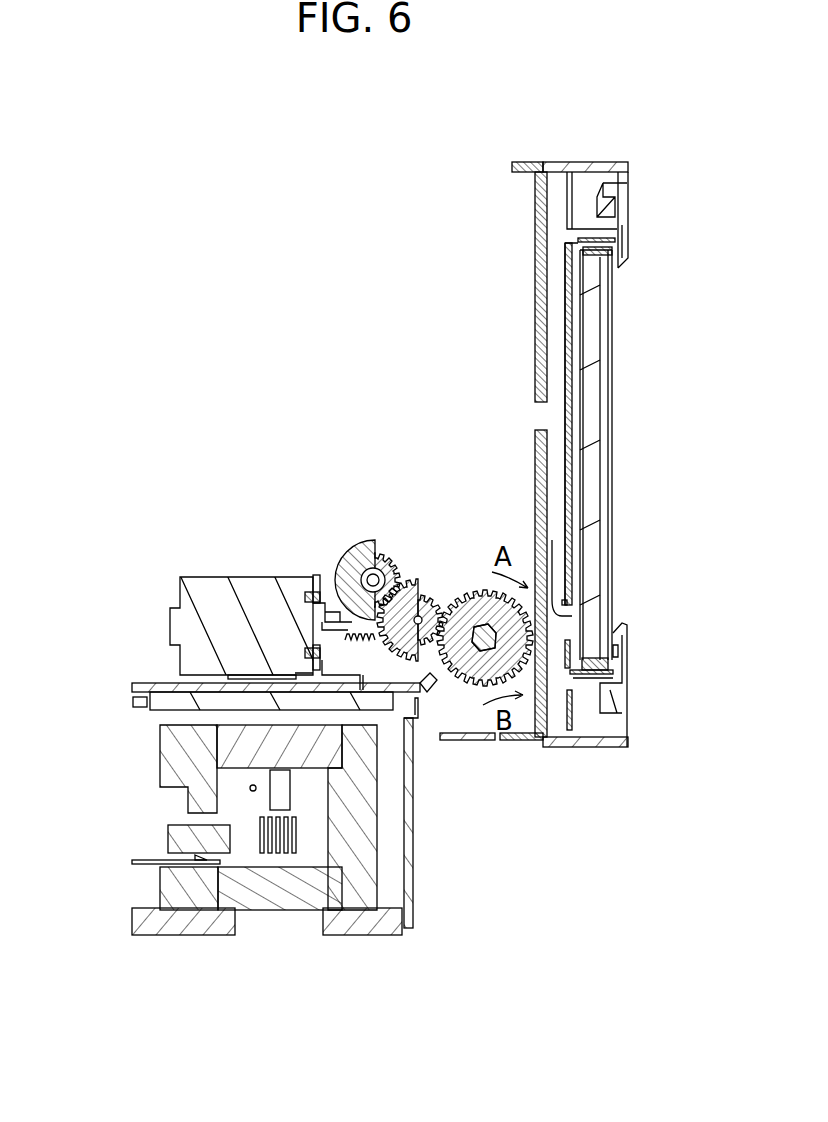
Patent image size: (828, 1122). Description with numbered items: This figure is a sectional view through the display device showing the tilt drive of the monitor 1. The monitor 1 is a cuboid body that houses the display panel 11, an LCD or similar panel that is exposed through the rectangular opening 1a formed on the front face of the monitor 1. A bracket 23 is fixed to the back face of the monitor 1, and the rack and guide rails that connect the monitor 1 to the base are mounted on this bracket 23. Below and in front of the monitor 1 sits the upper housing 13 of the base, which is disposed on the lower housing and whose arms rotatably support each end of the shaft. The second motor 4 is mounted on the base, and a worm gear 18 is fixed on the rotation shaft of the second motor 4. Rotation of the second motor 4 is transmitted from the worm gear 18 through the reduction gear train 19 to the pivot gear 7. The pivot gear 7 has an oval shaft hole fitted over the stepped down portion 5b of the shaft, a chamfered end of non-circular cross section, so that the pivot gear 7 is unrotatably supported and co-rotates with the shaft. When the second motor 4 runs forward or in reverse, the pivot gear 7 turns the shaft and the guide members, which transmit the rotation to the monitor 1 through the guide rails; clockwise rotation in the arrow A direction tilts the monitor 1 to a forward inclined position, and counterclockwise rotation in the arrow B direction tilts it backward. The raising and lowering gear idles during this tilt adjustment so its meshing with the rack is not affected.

The monitor 1 is at (626, 168).
The rectangular opening 1a is at (612, 632).
The bracket 23 is at (512, 166).
The display panel 11 is at (593, 434).
The second motor 4 is at (196, 595).
The worm gear 18 is at (336, 578).
The reduction gear train 19 is at (418, 580).
The pivot gear 7 is at (456, 594).
The stepped down portion 5b is at (482, 665).
The upper housing 13 is at (132, 686).